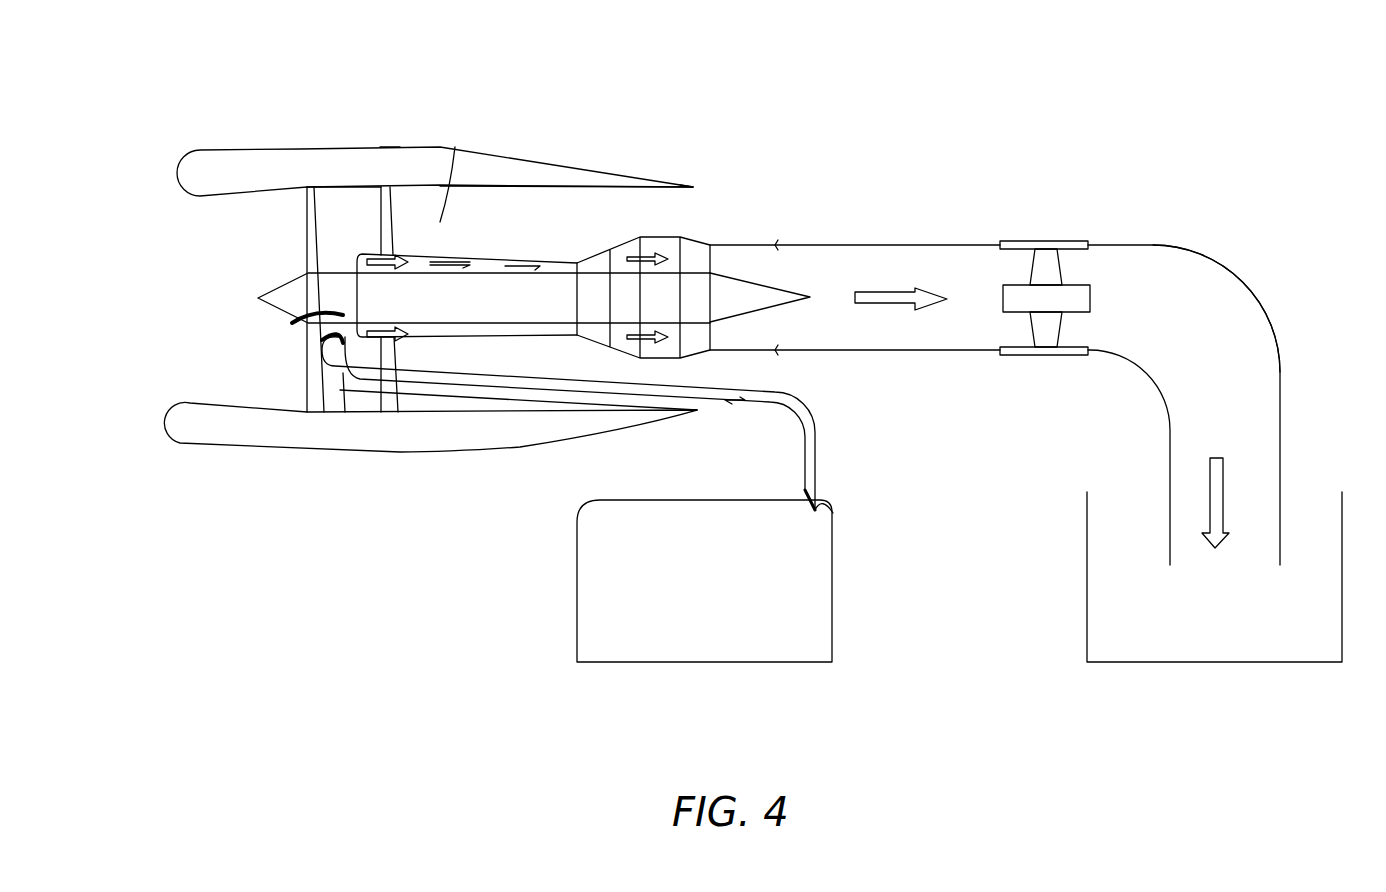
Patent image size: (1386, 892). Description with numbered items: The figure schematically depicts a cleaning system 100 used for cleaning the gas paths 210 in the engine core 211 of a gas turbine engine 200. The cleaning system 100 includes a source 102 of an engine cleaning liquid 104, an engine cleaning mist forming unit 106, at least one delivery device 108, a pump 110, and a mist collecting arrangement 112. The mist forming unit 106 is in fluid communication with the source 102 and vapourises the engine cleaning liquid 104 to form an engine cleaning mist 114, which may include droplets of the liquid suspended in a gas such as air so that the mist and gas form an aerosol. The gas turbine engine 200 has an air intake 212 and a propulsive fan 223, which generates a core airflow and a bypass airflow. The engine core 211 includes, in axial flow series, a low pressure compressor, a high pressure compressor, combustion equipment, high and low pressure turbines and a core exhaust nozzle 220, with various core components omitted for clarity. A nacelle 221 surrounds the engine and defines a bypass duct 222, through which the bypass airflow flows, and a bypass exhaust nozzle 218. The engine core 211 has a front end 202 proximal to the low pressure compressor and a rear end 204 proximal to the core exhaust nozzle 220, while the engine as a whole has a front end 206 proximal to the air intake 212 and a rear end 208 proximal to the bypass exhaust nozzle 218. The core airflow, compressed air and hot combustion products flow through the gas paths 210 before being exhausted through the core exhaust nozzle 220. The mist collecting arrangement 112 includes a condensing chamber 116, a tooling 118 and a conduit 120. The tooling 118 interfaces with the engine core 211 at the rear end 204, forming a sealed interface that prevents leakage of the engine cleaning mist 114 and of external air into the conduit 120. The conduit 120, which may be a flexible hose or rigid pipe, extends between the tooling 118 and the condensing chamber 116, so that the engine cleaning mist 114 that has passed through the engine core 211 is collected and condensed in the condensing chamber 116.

The cleaning system 100 is at (1252, 92).
The source 102 is at (577, 605).
The engine cleaning liquid 104 is at (738, 405).
The engine cleaning mist forming unit 106 is at (300, 308).
The delivery device 108 is at (812, 412).
The pump 110 is at (1063, 273).
The mist collecting arrangement 112 is at (1252, 238).
The engine cleaning mist 114 is at (382, 262).
The condensing chamber 116 is at (1232, 610).
The tooling 118 is at (770, 243).
The conduit 120 is at (847, 243).
The gas turbine engine 200 is at (220, 104).
The front end 202 is at (338, 247).
The rear end 204 is at (740, 244).
The front end 206 is at (170, 398).
The rear end 208 is at (706, 414).
The gas paths 210 is at (458, 262).
The engine core 211 is at (475, 262).
The air intake 212 is at (205, 208).
The bypass exhaust nozzle 218 is at (705, 190).
The core exhaust nozzle 220 is at (712, 356).
The nacelle 221 is at (388, 145).
The bypass duct 222 is at (566, 219).
The propulsive fan 223 is at (334, 200).